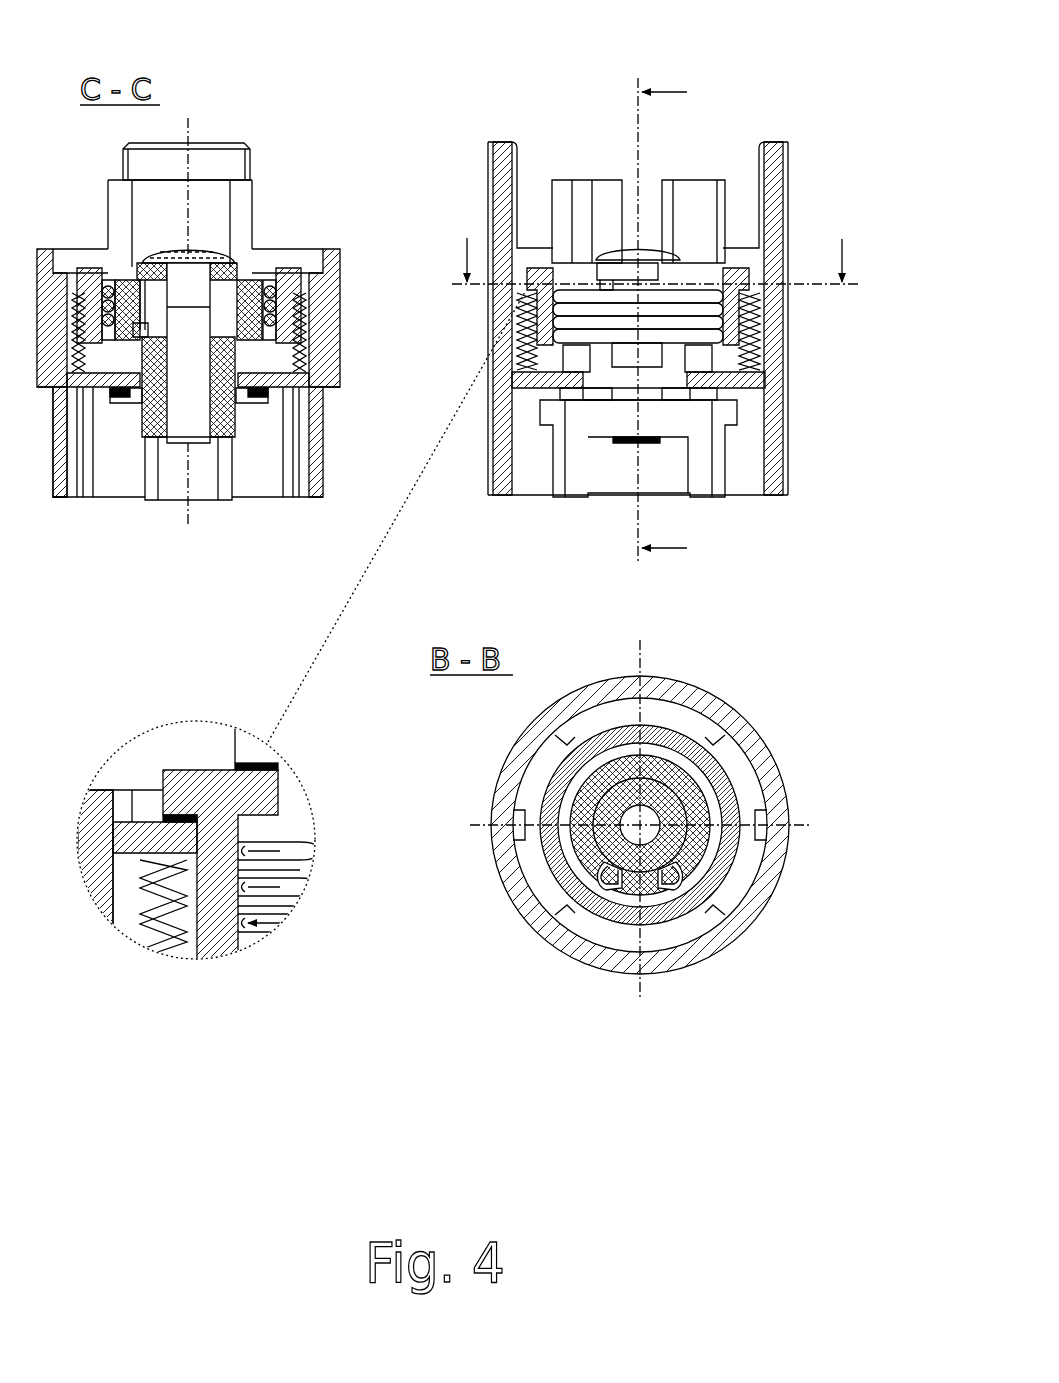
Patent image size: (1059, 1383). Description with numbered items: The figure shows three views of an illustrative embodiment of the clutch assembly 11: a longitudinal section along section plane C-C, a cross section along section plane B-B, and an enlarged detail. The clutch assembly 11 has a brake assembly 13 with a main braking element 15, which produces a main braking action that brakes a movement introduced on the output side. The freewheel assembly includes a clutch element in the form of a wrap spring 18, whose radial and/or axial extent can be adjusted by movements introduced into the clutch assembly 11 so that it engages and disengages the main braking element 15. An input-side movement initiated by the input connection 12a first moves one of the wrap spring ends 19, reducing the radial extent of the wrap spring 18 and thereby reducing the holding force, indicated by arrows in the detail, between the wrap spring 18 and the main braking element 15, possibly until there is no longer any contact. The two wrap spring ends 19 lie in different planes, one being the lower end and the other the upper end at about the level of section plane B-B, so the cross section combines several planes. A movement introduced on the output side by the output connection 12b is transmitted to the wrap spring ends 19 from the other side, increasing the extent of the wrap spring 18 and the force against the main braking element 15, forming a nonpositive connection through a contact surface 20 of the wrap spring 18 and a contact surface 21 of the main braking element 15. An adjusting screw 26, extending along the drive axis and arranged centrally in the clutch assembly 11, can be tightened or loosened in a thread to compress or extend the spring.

The clutch assembly 11 is at (758, 75).
The input connection 12a is at (605, 200).
The output connection 12b is at (703, 483).
The brake assembly 13 is at (800, 324).
The main braking element 15 is at (727, 262).
The wrap spring 18 is at (687, 342).
The wrap spring ends 19 is at (618, 332).
The contact surface of the wrap spring 20 is at (237, 921).
The contact surface of the main braking element 21 is at (250, 946).
The adjusting screw 26 is at (186, 262).